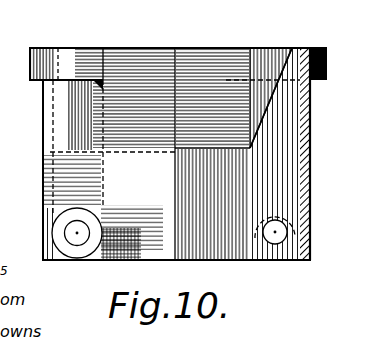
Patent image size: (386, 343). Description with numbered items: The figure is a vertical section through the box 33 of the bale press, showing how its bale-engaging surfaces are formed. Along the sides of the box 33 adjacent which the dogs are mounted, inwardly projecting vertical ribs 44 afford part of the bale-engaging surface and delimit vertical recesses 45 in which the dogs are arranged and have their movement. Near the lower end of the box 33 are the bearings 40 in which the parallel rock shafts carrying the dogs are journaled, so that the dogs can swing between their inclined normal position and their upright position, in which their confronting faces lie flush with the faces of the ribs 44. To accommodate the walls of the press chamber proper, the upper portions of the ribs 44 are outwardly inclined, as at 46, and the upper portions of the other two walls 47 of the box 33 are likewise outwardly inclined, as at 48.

The box 33 is at (312, 132).
The bearings 40 is at (58, 236).
The inwardly projecting vertical ribs 44 is at (277, 92).
The vertical recesses 45 is at (290, 117).
The outwardly inclined upper portion of the ribs 46 is at (73, 60).
The walls 47 is at (212, 204).
The outwardly inclined upper portion of the walls 48 is at (201, 66).